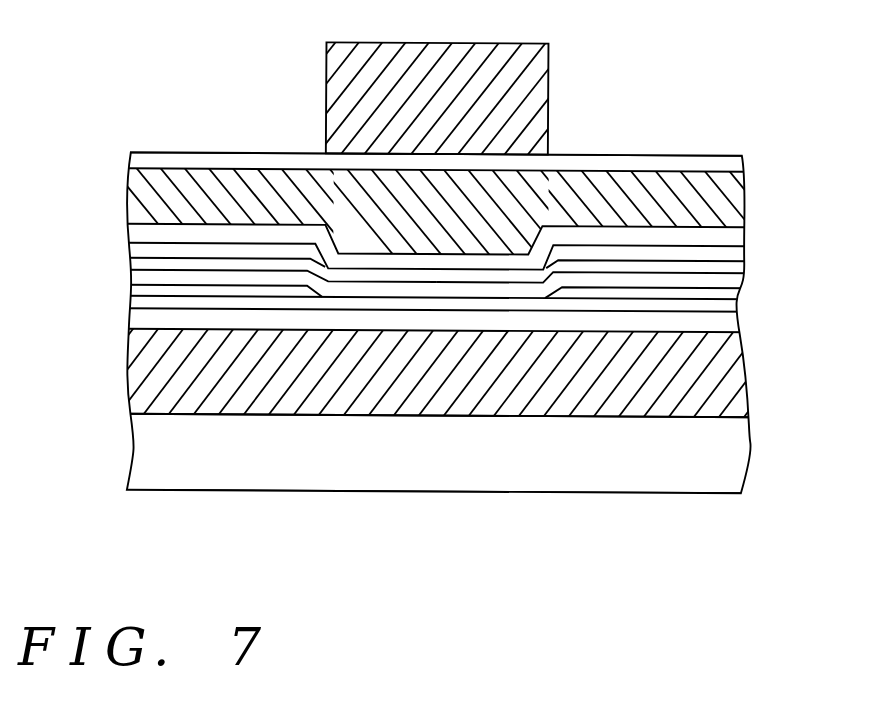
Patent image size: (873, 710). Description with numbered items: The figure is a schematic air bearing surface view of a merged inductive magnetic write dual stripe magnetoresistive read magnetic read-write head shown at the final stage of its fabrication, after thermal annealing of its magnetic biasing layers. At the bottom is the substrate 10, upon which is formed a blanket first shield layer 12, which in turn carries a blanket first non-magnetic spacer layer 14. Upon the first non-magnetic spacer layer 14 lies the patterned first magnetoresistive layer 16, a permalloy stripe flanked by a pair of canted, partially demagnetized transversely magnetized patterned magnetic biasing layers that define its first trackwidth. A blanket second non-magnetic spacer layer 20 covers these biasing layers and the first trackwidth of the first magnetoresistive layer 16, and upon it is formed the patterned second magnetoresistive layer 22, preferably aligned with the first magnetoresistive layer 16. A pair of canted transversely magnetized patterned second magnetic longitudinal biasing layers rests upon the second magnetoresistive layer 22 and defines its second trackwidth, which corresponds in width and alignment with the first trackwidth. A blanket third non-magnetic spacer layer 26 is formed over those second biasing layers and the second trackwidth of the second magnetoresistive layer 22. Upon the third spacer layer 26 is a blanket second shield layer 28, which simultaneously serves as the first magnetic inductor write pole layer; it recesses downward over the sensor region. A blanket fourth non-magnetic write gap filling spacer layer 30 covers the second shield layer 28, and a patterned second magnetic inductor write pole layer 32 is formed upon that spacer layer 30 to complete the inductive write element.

The substrate 10 is at (148, 452).
The blanket first shield layer 12 is at (132, 397).
The blanket first non-magnetic spacer layer 14 is at (130, 318).
The patterned first magnetoresistive (MR) layer 16 is at (738, 312).
The blanket second non-magnetic spacer layer 20 is at (132, 275).
The patterned second magnetoresistive (MR) layer 22 is at (738, 268).
The blanket third non-magnetic spacer layer 26 is at (132, 230).
The blanket second shield layer 28 is at (132, 182).
The blanket fourth non-magnetic write gap filling spacer layer 30 is at (738, 162).
The patterned second magnetic inductor write pole layer 32 is at (332, 91).